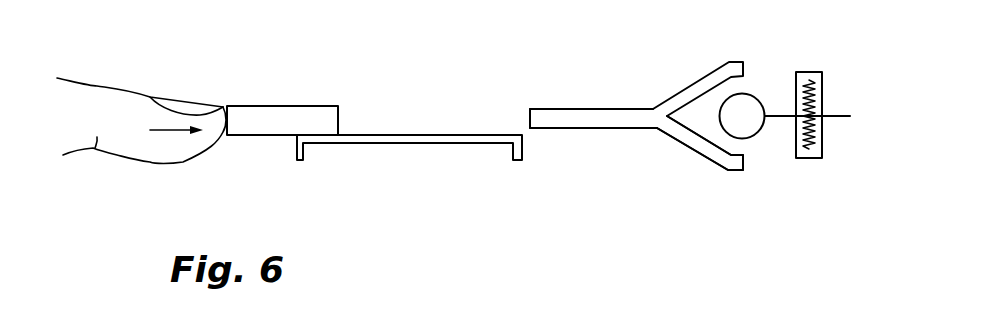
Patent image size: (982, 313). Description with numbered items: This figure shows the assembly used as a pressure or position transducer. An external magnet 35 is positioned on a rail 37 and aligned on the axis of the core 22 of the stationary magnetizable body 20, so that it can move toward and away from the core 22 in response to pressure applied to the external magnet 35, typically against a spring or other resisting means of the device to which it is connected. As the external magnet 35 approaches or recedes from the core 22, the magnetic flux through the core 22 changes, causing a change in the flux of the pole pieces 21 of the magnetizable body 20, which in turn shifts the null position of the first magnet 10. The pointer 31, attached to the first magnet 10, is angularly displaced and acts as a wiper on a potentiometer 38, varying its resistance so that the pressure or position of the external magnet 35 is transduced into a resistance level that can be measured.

The first magnet 10 is at (743, 98).
The magnetizable body 20 is at (611, 107).
The pole pieces 21 is at (705, 150).
The core 22 is at (580, 123).
The pointer 31 is at (780, 118).
The external magnet 35 is at (300, 106).
The rail 37 is at (402, 144).
The potentiometer 38 is at (822, 98).